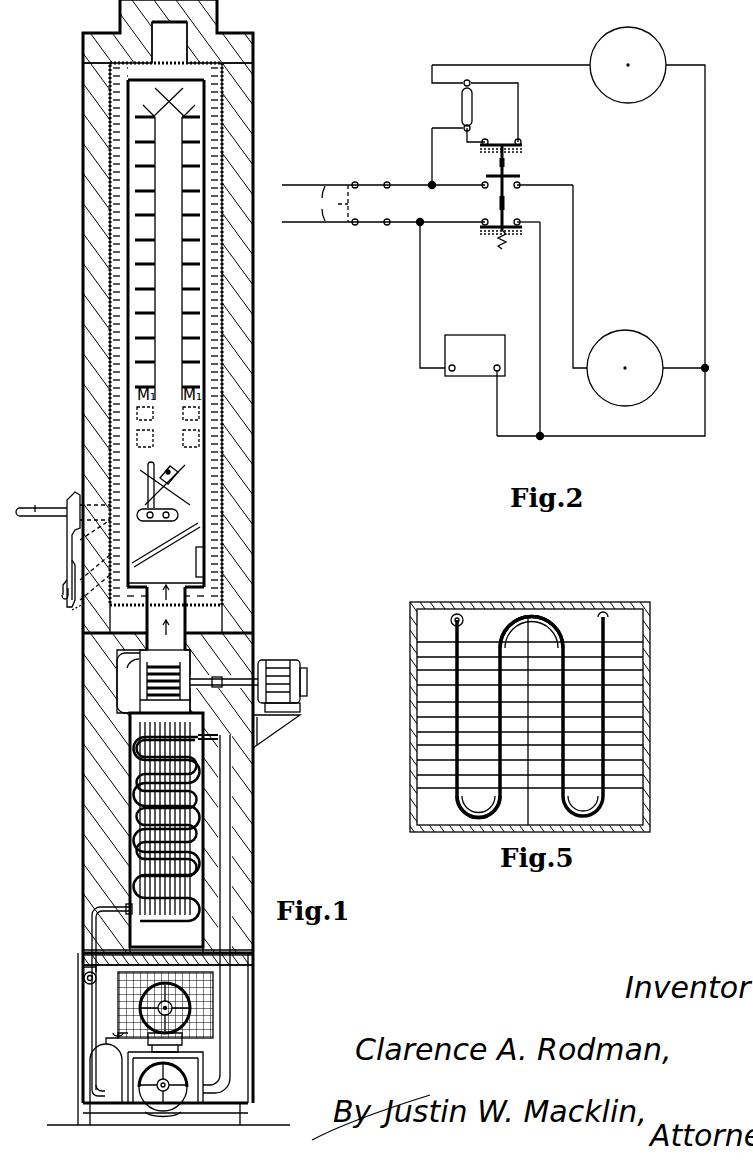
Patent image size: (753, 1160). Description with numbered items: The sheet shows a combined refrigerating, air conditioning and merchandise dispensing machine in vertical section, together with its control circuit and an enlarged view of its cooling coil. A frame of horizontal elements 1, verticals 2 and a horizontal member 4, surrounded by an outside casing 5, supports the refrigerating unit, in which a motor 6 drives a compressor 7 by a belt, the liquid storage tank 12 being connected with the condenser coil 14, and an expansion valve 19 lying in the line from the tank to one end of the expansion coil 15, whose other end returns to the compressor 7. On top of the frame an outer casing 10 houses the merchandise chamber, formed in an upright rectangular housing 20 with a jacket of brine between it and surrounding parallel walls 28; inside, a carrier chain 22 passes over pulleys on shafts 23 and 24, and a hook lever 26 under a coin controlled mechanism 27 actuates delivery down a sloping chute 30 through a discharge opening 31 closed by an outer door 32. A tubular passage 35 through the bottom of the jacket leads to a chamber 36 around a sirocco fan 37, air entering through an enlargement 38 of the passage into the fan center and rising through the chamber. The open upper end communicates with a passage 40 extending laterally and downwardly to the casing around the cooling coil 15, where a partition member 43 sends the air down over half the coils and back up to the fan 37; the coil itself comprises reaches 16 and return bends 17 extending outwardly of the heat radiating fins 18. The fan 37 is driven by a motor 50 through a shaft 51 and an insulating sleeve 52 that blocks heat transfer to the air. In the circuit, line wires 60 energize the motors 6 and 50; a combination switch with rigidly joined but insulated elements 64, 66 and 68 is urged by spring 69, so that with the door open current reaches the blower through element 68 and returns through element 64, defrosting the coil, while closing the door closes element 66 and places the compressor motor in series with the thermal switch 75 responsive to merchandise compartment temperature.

In FIG. 1, the horizontal elements 1 is at (215, 1113).
In FIG. 1, the verticals 2 is at (240, 1088).
In FIG. 1, the horizontal member 4 is at (248, 974).
In FIG. 1, the outside casing 5 is at (83, 1009).
In FIG. 1, the motor 6 is at (165, 1017).
In FIG. 2, the motor 6 is at (645, 330).
In FIG. 1, the compressor 7 is at (165, 1084).
In FIG. 1, the outer casing 10 is at (253, 505).
In FIG. 1, the liquid storage tank 12 is at (109, 1068).
In FIG. 1, the condenser coil 14 is at (118, 1008).
In FIG. 1, the expansion coil 15 is at (130, 790).
In FIG. 5, the expansion coil 15 is at (458, 613).
In FIG. 5, the reaches 16 is at (530, 617).
In FIG. 5, the return bends 17 is at (478, 818).
In FIG. 5, the heat radiating fins 18 is at (620, 640).
In FIG. 1, the expansion valve 19 is at (84, 980).
In FIG. 1, the housing 20 is at (130, 582).
In FIG. 1, the carrier chain 22 is at (187, 336).
In FIG. 1, the shaft 23 is at (170, 462).
In FIG. 1, the shaft 24 is at (168, 118).
In FIG. 1, the hook lever 26 is at (41, 501).
In FIG. 1, the coin controlled mechanism 27 is at (68, 537).
In FIG. 1, the parallel walls 28 is at (225, 117).
In FIG. 1, the sloping chute 30 is at (163, 553).
In FIG. 1, the discharge opening 31 is at (65, 608).
In FIG. 1, the outer door 32 is at (72, 580).
In FIG. 1, the tubular passage 35 is at (166, 617).
In FIG. 1, the chamber 36 is at (165, 706).
In FIG. 1, the fan 37 is at (165, 681).
In FIG. 1, the enlargement of the passage 38 is at (117, 680).
In FIG. 1, the passage 40 is at (169, 42).
In FIG. 5, the partition member 43 is at (533, 632).
In FIG. 1, the motor 50 is at (300, 668).
In FIG. 2, the motor 50 is at (632, 22).
In FIG. 1, the shaft 51 is at (282, 686).
In FIG. 1, the insulating sleeve 52 is at (222, 672).
In FIG. 2, the line wires 60 is at (383, 204).
In FIG. 2, the switch element 64 is at (480, 229).
In FIG. 2, the switch element 66 is at (482, 178).
In FIG. 2, the switch element 68 is at (480, 146).
In FIG. 2, the spring 69 is at (497, 248).
In FIG. 1, the thermal switch 75 is at (196, 572).
In FIG. 2, the thermal switch 75 is at (462, 329).